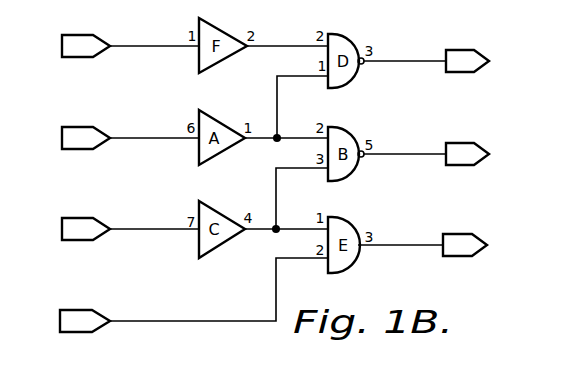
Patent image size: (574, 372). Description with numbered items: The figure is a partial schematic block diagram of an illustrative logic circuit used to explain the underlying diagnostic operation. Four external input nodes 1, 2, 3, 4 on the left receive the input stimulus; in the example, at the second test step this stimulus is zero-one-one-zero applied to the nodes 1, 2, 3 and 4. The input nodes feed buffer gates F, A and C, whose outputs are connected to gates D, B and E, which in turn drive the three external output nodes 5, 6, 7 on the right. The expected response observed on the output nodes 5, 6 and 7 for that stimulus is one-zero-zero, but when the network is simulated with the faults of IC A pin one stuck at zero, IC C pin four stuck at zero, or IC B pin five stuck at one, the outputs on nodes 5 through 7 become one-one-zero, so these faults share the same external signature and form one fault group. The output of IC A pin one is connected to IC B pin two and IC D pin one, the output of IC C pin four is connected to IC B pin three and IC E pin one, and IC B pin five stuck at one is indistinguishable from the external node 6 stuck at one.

The node 1 is at (130, 37).
The node 2 is at (130, 129).
The node 3 is at (130, 221).
The node 4 is at (194, 295).
The node 5 is at (432, 61).
The node 6 is at (433, 154).
The node 7 is at (428, 245).